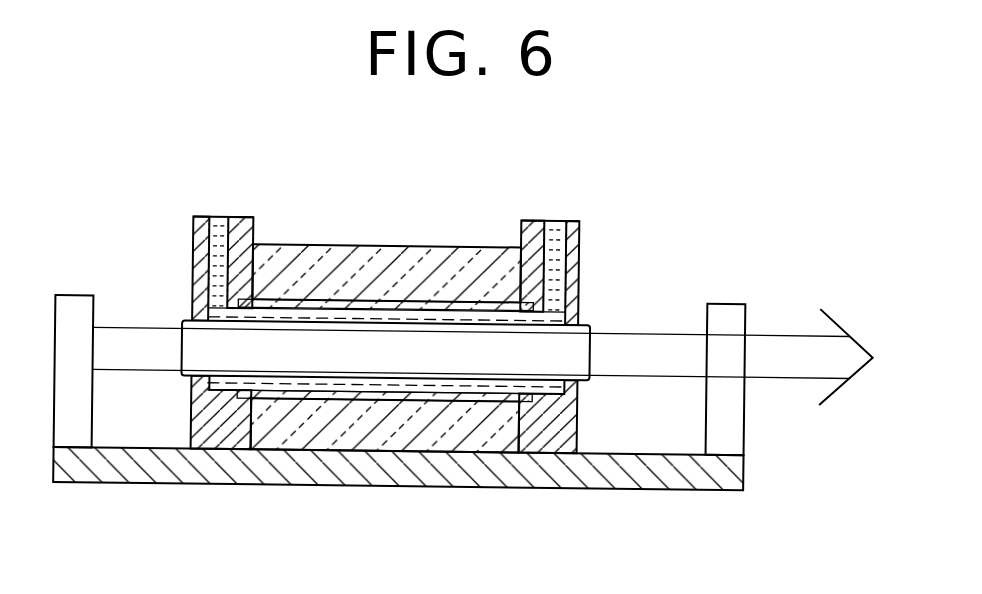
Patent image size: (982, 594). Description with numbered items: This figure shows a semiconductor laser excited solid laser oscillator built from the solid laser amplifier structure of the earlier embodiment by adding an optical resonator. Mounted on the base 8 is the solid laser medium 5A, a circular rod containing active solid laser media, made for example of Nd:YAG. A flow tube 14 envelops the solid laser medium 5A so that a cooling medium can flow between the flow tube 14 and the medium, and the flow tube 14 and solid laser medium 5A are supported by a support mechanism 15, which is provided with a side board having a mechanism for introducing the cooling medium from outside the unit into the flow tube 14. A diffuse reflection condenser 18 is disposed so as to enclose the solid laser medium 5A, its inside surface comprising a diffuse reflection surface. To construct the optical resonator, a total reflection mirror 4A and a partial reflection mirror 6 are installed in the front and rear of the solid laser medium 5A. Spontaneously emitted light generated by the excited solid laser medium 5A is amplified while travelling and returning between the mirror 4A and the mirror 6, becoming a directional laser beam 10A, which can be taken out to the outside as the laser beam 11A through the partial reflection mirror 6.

The total reflection mirror 4A is at (73, 320).
The directional laser beam 10A is at (155, 327).
The diffuse reflection condenser 18 is at (335, 247).
The flow tube 14 is at (415, 296).
The support mechanism 15 is at (534, 231).
The solid laser medium 5A is at (583, 351).
The partial reflection mirror 6 is at (727, 314).
The laser beam 11A is at (793, 346).
The base 8 is at (380, 466).